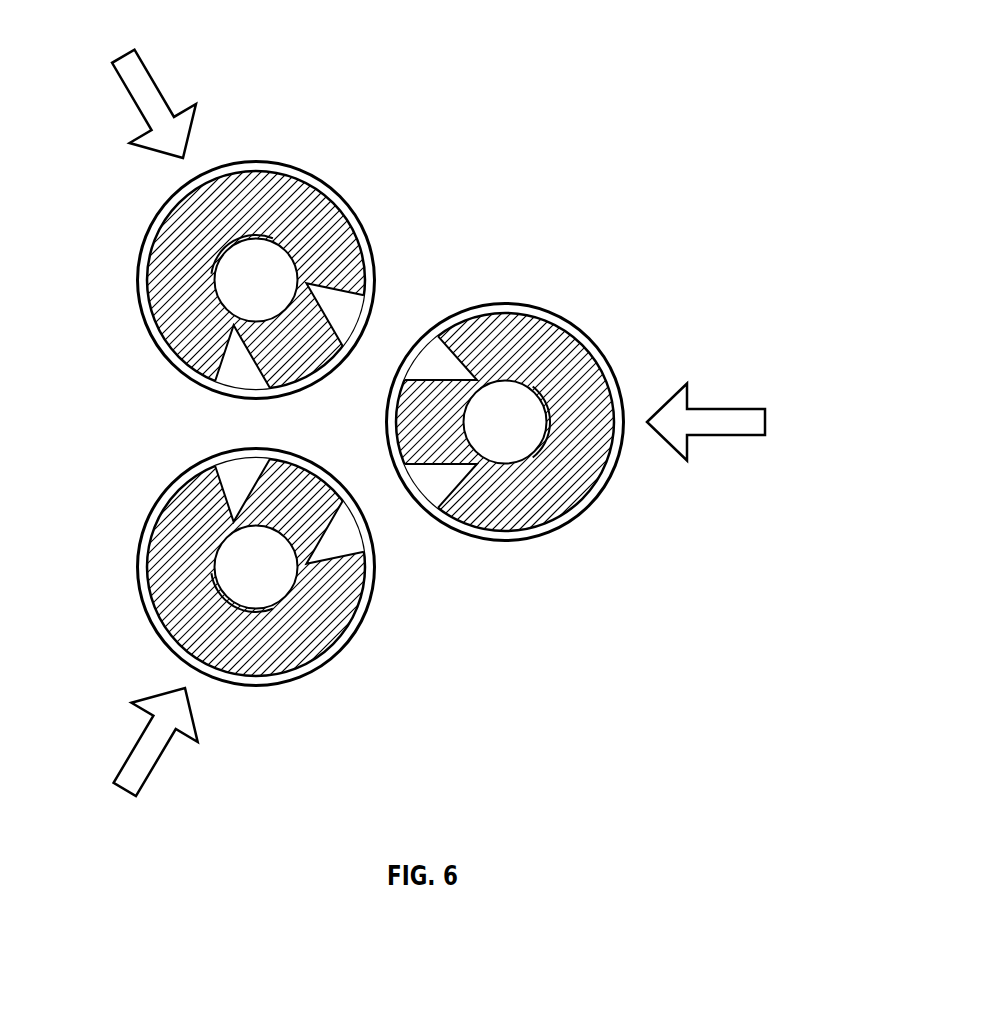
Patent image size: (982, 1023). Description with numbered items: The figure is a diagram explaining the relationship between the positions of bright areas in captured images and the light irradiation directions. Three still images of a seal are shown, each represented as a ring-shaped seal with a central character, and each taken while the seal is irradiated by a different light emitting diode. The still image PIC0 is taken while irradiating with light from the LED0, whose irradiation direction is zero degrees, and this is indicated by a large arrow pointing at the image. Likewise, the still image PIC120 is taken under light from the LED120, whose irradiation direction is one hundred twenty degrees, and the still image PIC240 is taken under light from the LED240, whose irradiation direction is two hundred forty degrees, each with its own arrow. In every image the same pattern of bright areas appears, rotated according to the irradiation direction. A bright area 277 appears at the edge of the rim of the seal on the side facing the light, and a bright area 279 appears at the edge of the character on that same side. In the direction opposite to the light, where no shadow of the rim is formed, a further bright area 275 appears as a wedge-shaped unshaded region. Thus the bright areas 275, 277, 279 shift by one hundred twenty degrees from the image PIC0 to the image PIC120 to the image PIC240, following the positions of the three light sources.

The bright area 275 is at (440, 343).
The bright area 277 is at (388, 423).
The bright area 279 is at (224, 246).
The still image PIC0 is at (501, 422).
The still image PIC120 is at (289, 257).
The still image PIC240 is at (289, 589).
The LED LED0 is at (742, 422).
The LED LED120 is at (136, 97).
The LED LED240 is at (138, 750).